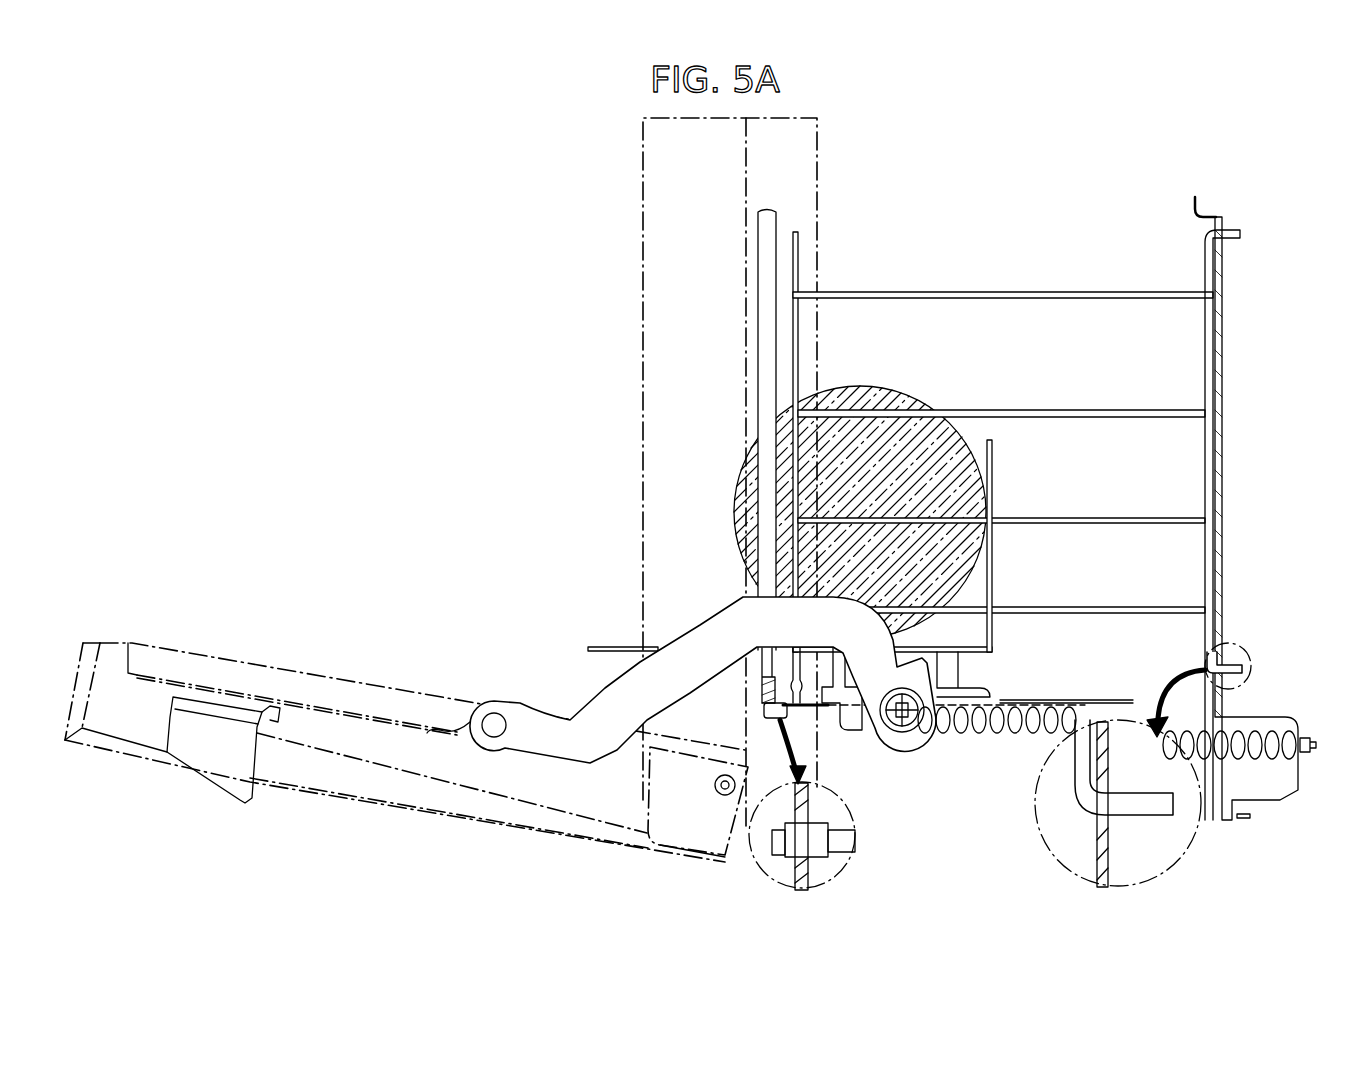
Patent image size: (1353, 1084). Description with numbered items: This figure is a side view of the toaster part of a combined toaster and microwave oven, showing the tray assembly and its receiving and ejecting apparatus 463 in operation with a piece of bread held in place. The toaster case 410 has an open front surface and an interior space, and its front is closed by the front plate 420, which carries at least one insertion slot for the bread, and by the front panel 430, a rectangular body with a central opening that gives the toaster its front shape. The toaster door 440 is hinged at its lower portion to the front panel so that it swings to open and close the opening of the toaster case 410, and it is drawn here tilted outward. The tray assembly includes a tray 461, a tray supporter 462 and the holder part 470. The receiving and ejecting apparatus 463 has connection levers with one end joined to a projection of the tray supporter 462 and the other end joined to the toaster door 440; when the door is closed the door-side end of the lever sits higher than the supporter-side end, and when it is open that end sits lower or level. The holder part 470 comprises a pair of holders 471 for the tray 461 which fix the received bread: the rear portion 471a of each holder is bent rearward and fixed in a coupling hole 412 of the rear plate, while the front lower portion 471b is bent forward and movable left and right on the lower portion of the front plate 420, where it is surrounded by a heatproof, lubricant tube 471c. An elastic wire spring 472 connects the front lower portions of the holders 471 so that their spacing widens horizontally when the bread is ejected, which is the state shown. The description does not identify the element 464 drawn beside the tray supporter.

The toaster case 410 is at (1222, 376).
The coupling hole 412 is at (1080, 862).
The front plate 420 is at (755, 333).
The front panel 430 is at (638, 243).
The toaster door 440 is at (270, 668).
The tray 461 is at (615, 645).
The tray supporter 462 is at (852, 722).
The receiving and ejecting apparatus 463 is at (712, 627).
The spring 464 is at (1002, 740).
The holder part 470 is at (1288, 540).
The holder 471 is at (1167, 520).
The rear portion of the holder 471a is at (1240, 230).
The front lower portion of the holder 471b is at (780, 848).
The heatproof tube 471c is at (818, 837).
The elastic spring 472 is at (1100, 702).
The element bread is at (897, 388).